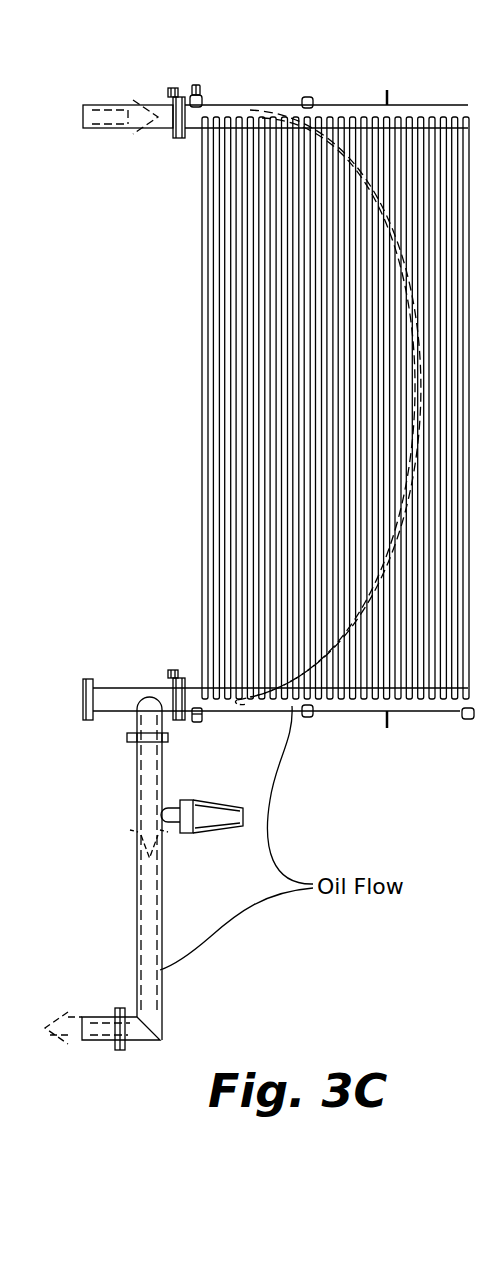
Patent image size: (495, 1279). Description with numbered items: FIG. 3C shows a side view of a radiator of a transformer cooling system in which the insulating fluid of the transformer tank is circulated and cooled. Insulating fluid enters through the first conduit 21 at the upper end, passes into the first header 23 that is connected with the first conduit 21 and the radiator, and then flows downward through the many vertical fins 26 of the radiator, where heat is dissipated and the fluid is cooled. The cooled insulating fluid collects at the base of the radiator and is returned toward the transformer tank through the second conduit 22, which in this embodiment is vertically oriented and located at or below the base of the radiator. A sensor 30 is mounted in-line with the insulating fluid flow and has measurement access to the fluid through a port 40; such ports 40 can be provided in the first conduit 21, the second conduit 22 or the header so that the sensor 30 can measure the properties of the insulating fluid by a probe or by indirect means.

The first conduit 21 is at (112, 112).
The second conduit 22 is at (118, 695).
The first header 23 is at (335, 108).
The fins 26 is at (201, 443).
The sensor 30 is at (217, 805).
The port 40 is at (191, 90).